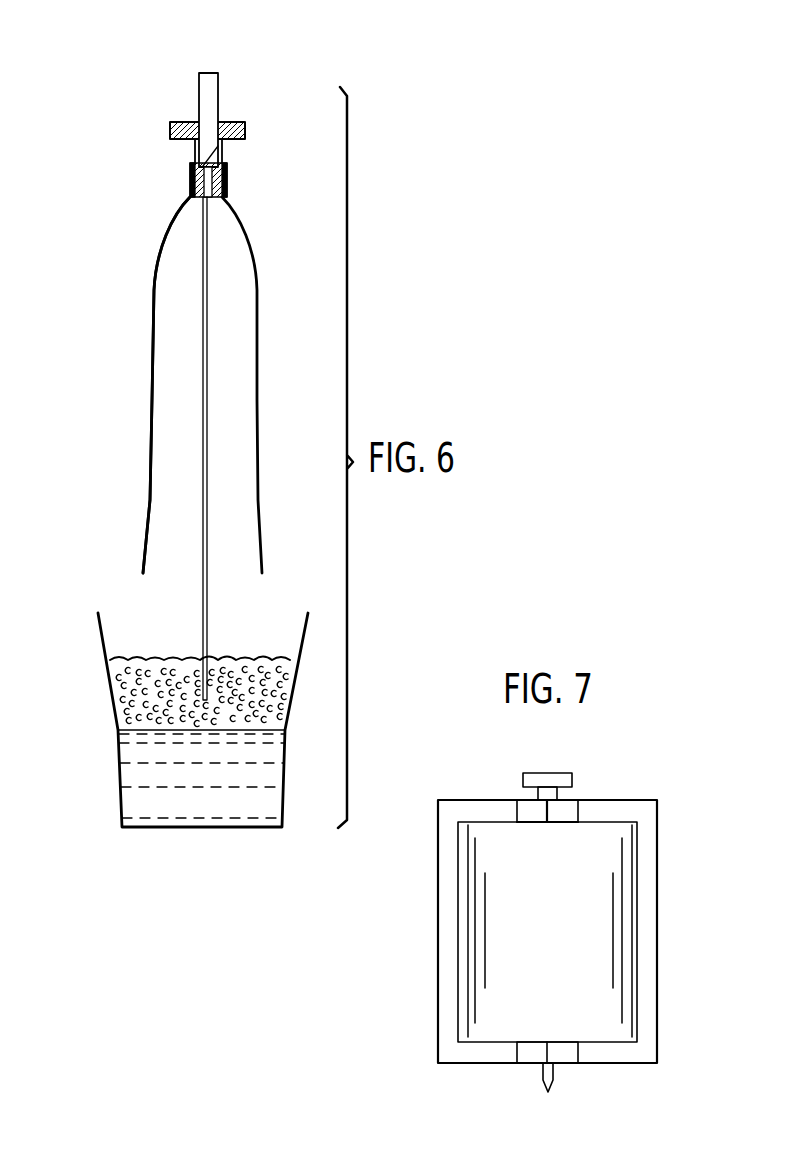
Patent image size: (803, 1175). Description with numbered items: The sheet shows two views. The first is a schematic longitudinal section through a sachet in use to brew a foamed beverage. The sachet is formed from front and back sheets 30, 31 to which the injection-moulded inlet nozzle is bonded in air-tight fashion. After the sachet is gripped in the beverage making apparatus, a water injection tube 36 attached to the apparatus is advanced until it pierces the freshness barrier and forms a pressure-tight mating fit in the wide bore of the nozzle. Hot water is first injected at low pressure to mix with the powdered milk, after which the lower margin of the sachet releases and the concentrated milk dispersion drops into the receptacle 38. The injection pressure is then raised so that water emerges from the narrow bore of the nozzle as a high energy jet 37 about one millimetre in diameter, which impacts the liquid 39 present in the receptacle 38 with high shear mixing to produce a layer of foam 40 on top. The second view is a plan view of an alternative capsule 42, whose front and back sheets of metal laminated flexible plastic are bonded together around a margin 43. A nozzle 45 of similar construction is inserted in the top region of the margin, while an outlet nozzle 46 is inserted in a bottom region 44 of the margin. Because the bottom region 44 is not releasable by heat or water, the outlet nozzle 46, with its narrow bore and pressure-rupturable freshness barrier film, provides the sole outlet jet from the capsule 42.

In FIG. 6, the front sheet 30 is at (258, 292).
In FIG. 6, the back sheet 31 is at (154, 290).
In FIG. 6, the water injection tube 36 is at (210, 72).
In FIG. 6, the high energy jet 37 is at (208, 612).
In FIG. 6, the receptacle 38 is at (99, 637).
In FIG. 6, the liquid 39 is at (130, 778).
In FIG. 6, the layer of foam 40 is at (125, 702).
In FIG. 7, the capsule 42 is at (665, 797).
In FIG. 7, the margin 43 is at (668, 886).
In FIG. 7, the bottom region of the margin 44 is at (622, 1063).
In FIG. 7, the nozzle 45 is at (547, 773).
In FIG. 7, the outlet nozzle 46 is at (529, 1067).